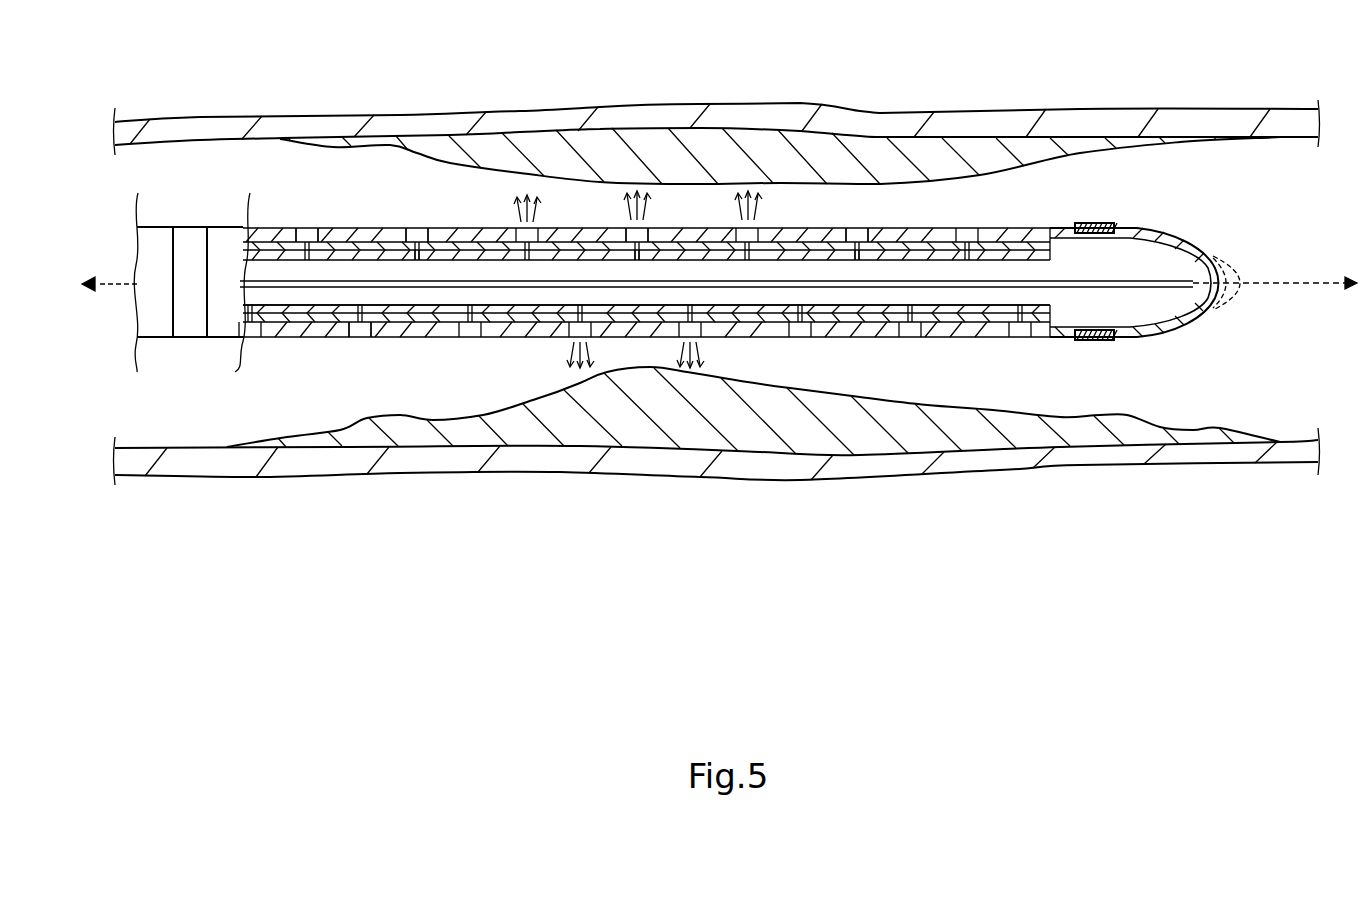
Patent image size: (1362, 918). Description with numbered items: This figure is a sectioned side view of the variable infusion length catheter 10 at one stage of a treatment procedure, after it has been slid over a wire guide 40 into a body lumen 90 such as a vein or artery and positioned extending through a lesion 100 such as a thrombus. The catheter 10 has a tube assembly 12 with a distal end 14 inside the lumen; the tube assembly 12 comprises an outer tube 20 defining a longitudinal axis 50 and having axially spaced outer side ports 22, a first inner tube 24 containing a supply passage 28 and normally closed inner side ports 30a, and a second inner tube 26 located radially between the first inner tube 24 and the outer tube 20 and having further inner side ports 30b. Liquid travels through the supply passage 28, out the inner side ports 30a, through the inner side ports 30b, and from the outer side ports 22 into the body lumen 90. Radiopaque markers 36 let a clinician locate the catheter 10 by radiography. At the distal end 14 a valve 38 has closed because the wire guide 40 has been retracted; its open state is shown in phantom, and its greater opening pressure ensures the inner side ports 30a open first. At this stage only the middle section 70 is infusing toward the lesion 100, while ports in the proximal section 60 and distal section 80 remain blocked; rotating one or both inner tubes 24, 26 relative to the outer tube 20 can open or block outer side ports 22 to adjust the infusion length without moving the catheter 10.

The variable infusion length catheter 10 is at (178, 200).
The tube assembly 12 is at (232, 222).
The distal end 14 is at (1214, 262).
The outer tube 20 is at (282, 227).
The outer side ports 22 is at (307, 227).
The first inner tube 24 is at (352, 248).
The second inner tube 26 is at (322, 328).
The supply passage 28 is at (437, 294).
The inner side ports 30a is at (418, 258).
The inner side ports 30b is at (422, 240).
The radiopaque markers 36 is at (190, 340).
The valve 38 is at (1236, 262).
The wire guide 40 is at (1167, 290).
The longitudinal axis 50 is at (105, 290).
The proximal section 60 is at (410, 383).
The middle section 70 is at (556, 354).
The distal section 80 is at (890, 354).
The body lumen 90 is at (1152, 170).
The lesion 100 is at (1003, 150).